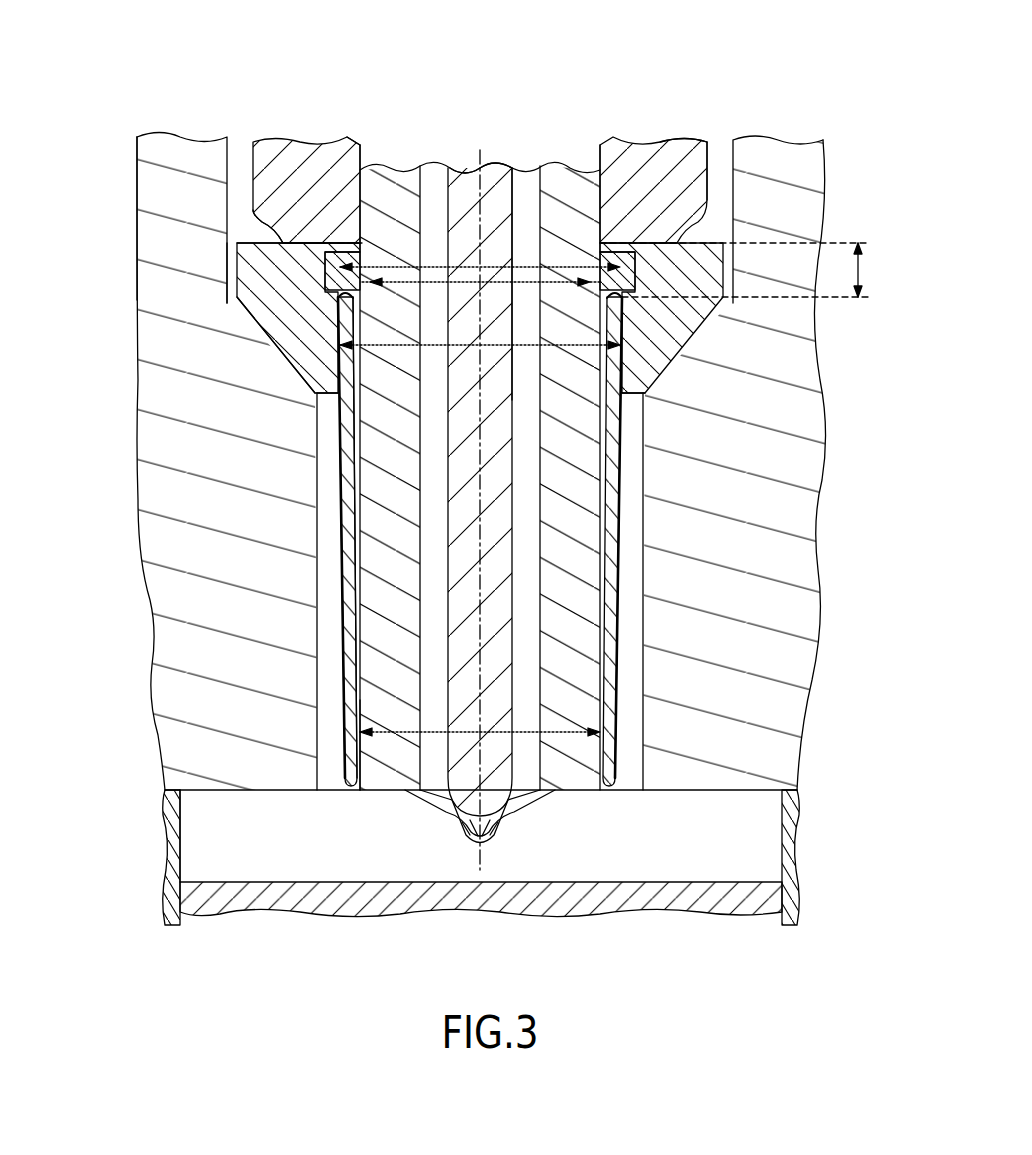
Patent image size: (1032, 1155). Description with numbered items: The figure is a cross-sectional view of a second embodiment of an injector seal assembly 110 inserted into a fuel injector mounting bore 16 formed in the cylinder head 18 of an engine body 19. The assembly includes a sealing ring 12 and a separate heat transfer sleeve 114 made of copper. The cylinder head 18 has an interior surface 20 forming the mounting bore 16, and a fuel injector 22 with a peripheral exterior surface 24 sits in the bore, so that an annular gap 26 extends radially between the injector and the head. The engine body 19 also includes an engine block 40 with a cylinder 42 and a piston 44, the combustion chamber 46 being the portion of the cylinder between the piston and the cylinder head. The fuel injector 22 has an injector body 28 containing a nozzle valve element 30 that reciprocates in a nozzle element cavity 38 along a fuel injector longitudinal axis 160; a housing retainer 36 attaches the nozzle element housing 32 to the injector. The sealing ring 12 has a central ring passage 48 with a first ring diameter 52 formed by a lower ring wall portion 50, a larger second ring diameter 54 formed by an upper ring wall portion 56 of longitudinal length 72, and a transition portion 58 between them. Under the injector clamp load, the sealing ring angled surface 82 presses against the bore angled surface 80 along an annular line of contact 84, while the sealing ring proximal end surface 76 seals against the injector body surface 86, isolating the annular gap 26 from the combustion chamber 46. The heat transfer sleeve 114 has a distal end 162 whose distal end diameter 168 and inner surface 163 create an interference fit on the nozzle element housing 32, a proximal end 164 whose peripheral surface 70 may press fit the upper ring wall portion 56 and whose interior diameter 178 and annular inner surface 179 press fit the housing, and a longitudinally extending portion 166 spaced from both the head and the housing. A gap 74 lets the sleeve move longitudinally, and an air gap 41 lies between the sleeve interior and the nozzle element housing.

The sealing ring 12 is at (252, 241).
The fuel injector mounting bore 16 is at (632, 625).
The cylinder head 18 is at (150, 297).
The engine body 19 is at (132, 149).
The interior surface 20 is at (733, 160).
The fuel injector 22 is at (250, 167).
The peripheral exterior surface 24 is at (712, 203).
The annular gap 26 is at (715, 160).
The injector body 28 is at (346, 121).
The nozzle valve element 30 is at (470, 172).
The nozzle element housing 32 is at (553, 797).
The housing retainer 36 is at (300, 150).
The nozzle element cavity 38 is at (548, 532).
The engine block 40 is at (170, 857).
The air gap 41 is at (601, 478).
The cylinder 42 is at (185, 857).
The piston 44 is at (350, 875).
The combustion chamber 46 is at (717, 860).
The central ring passage 48 is at (624, 392).
The lower ring wall portion 50 is at (341, 370).
The first ring diameter 52 is at (489, 347).
The second ring diameter 54 is at (493, 268).
The upper ring wall portion 56 is at (337, 251).
The transition portion 58 is at (354, 296).
The peripheral surface 70 is at (637, 272).
The longitudinal length 72 is at (862, 270).
The gap 74 is at (613, 190).
The sealing ring proximal end surface 76 is at (290, 242).
The bore angled surface 80 is at (280, 324).
The sealing ring angled surface 82 is at (278, 340).
The annular line of contact 84 is at (646, 390).
The injector body surface 86 is at (283, 245).
The injector seal assembly 110 is at (227, 237).
The heat transfer sleeve 114 is at (342, 455).
The fuel injector longitudinal axis 160 is at (482, 885).
The distal end 162 is at (623, 770).
The inner surface 163 is at (360, 755).
The proximal end 164 is at (642, 293).
The longitudinally extending portion 166 is at (330, 545).
The distal end diameter 168 is at (435, 730).
The interior diameter 178 is at (433, 280).
The annular inner surface 179 is at (600, 260).